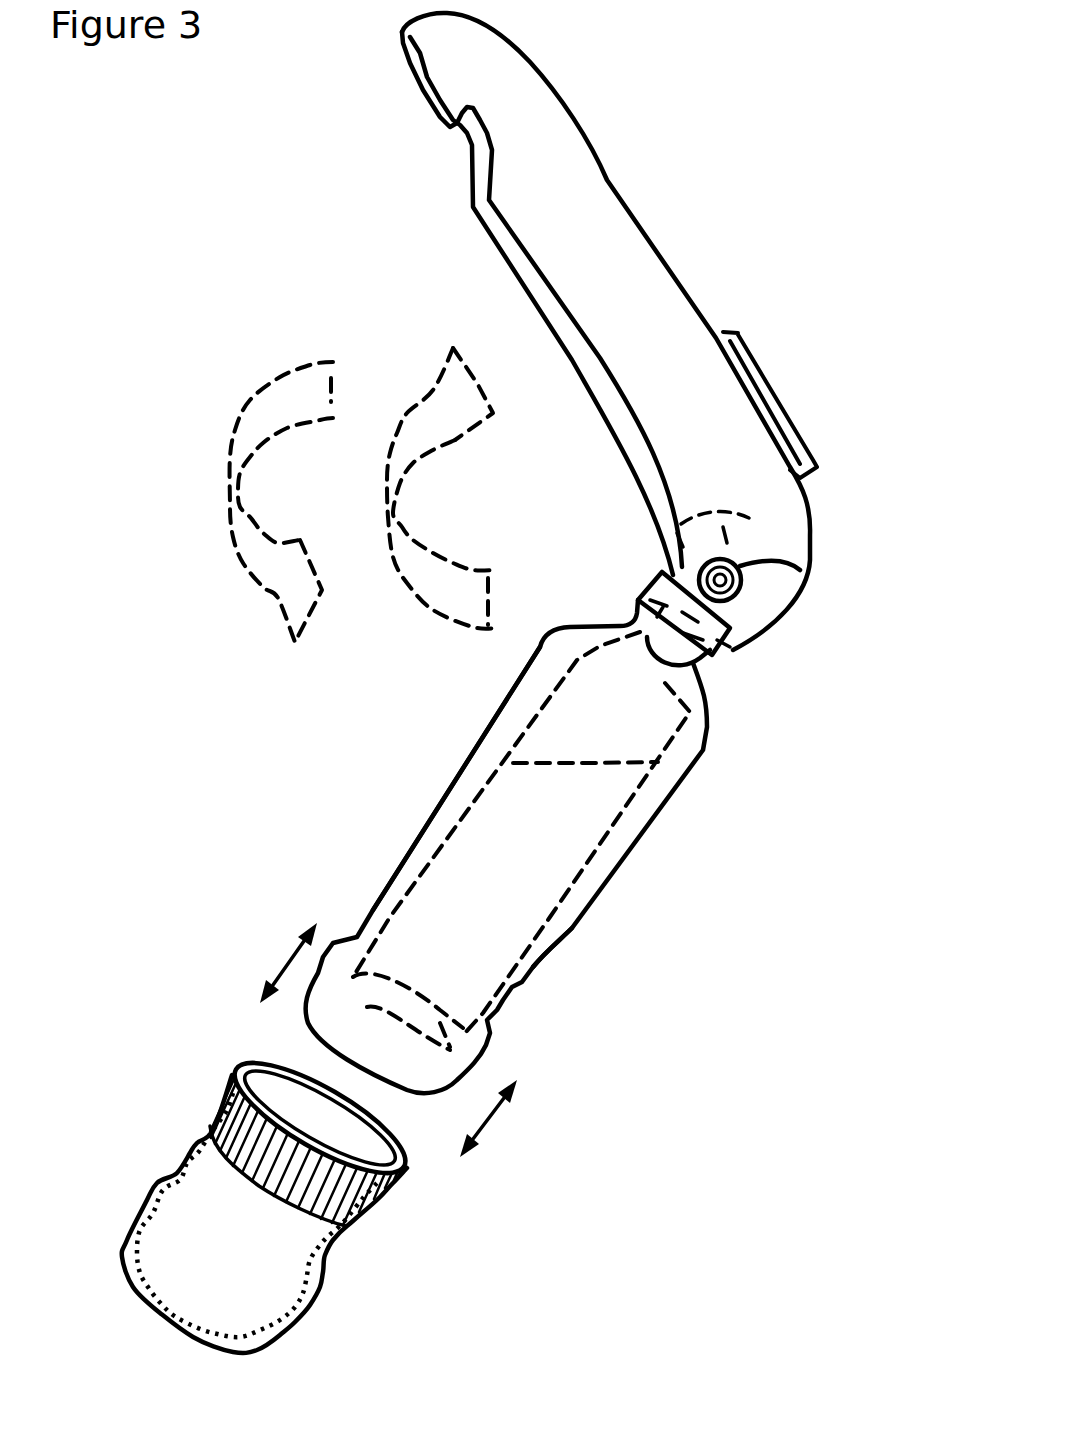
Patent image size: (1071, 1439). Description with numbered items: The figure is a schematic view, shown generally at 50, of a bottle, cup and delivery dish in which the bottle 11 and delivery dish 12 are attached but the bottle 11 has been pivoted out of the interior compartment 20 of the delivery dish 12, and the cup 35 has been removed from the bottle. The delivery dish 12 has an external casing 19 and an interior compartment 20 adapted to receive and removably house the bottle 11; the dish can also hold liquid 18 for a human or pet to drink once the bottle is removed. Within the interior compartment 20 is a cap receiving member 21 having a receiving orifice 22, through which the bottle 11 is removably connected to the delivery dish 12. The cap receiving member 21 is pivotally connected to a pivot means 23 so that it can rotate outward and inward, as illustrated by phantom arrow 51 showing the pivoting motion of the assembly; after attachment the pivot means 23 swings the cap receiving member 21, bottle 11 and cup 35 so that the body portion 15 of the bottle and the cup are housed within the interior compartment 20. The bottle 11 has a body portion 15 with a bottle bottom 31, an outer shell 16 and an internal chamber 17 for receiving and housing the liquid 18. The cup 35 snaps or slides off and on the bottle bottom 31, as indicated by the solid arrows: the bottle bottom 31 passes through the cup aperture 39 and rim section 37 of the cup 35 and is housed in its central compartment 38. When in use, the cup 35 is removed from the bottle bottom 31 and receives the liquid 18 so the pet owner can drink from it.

The bottle, cup and delivery dish assembly 50 is at (212, 213).
The delivery dish 12 is at (667, 267).
The external casing 19 is at (603, 180).
The interior compartment 20 is at (528, 265).
The pivot means 23 is at (808, 580).
The cap receiving member 21 is at (631, 590).
The receiving orifice 22 is at (687, 660).
The bottle 11 is at (580, 937).
The body portion 15 is at (390, 890).
The outer shell 16 is at (457, 797).
The internal chamber 17 is at (630, 740).
The liquid 18 is at (573, 847).
The bottle bottom 31 is at (465, 1061).
The cup 35 is at (131, 1189).
The rim section 37 is at (237, 1073).
The central compartment 38 is at (300, 1100).
The cup aperture 39 is at (360, 1147).
The phantom arrow 51 is at (217, 490).